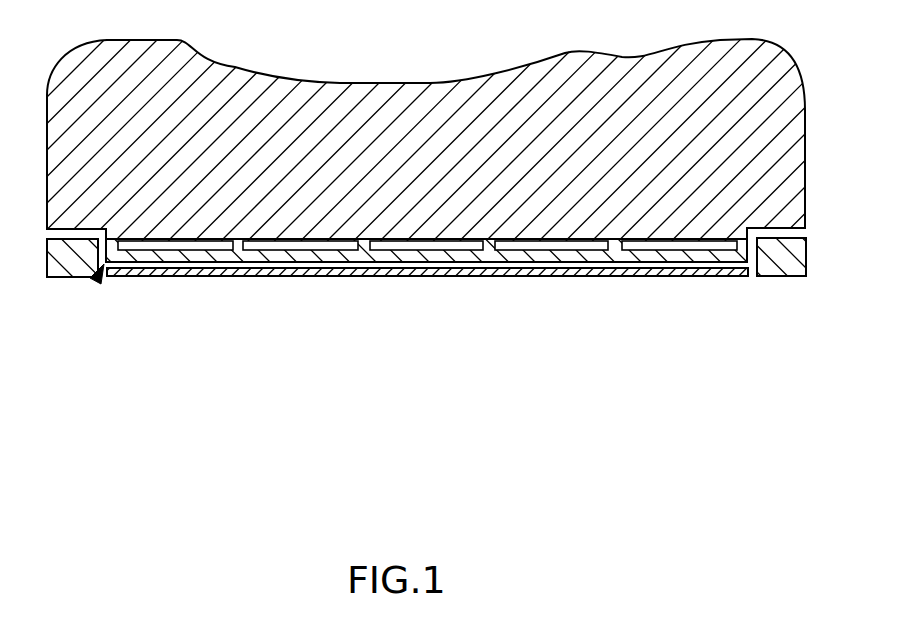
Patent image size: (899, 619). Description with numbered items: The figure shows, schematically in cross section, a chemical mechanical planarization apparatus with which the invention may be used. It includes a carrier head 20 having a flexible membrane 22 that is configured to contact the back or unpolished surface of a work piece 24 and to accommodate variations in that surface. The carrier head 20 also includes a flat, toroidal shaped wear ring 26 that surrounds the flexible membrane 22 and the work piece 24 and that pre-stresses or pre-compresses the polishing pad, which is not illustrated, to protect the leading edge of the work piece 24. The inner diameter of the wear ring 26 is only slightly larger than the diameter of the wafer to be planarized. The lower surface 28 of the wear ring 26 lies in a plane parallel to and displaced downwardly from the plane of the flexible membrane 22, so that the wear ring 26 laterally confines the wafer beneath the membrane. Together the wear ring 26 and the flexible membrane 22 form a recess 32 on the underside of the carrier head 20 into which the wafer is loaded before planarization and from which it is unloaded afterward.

The carrier head 20 is at (779, 61).
The flexible membrane 22 is at (697, 255).
The work piece 24 is at (332, 277).
The wear ring 26 is at (73, 265).
The lower surface 28 is at (790, 277).
The recess 32 is at (100, 285).